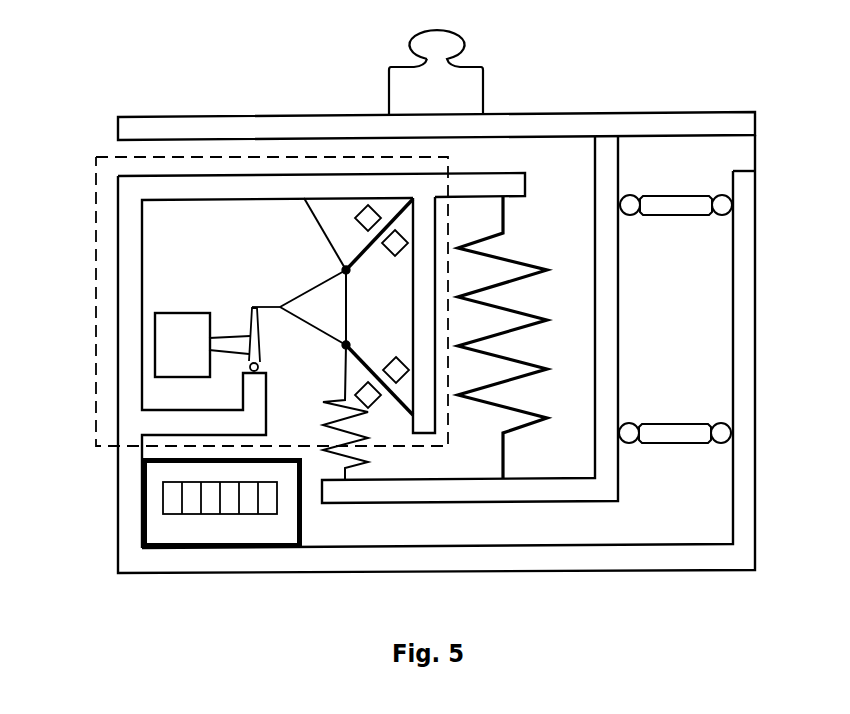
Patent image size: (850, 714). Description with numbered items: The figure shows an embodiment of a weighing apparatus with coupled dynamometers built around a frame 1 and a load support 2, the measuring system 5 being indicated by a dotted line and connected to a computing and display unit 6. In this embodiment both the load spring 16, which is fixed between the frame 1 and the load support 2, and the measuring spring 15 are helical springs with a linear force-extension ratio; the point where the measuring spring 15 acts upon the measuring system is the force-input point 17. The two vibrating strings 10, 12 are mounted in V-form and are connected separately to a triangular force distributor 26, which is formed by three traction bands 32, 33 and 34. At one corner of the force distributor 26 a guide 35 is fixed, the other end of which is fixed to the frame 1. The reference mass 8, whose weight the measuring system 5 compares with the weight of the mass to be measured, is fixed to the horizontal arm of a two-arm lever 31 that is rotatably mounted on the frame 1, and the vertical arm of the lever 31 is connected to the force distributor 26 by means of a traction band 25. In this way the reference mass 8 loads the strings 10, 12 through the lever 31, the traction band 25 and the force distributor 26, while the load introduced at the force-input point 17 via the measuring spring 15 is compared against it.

The frame 1 is at (132, 412).
The load support 2 is at (605, 395).
The measuring system 5 is at (180, 222).
The computing and display unit 6 is at (150, 511).
The reference mass 8 is at (175, 339).
The vibrating string 10 is at (408, 407).
The second vibrating string 12 is at (362, 255).
The measuring spring 15 is at (342, 409).
The load spring 16 is at (527, 362).
The force-input point 17 is at (343, 347).
The traction band 25 is at (266, 305).
The triangular force distributor 26 is at (330, 273).
The two-arm lever 31 is at (237, 345).
The traction band 32 is at (312, 287).
The traction band 33 is at (320, 333).
The traction band 34 is at (348, 307).
The guide 35 is at (312, 214).